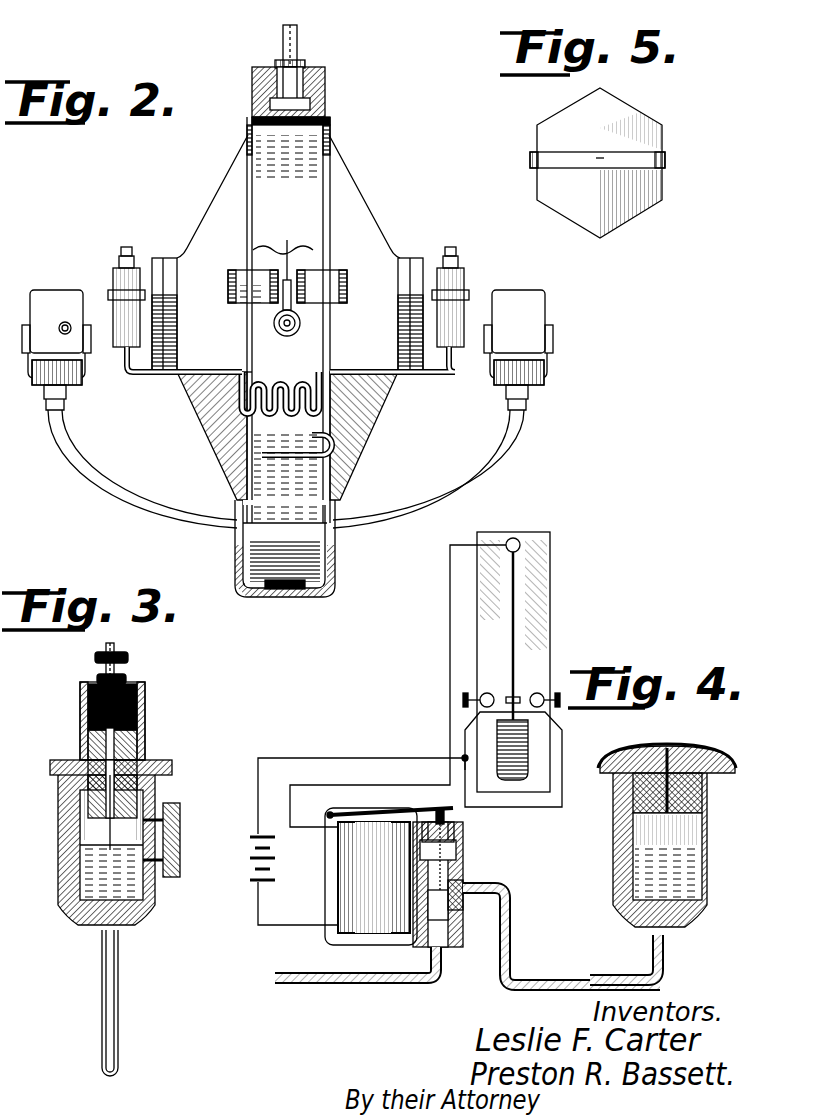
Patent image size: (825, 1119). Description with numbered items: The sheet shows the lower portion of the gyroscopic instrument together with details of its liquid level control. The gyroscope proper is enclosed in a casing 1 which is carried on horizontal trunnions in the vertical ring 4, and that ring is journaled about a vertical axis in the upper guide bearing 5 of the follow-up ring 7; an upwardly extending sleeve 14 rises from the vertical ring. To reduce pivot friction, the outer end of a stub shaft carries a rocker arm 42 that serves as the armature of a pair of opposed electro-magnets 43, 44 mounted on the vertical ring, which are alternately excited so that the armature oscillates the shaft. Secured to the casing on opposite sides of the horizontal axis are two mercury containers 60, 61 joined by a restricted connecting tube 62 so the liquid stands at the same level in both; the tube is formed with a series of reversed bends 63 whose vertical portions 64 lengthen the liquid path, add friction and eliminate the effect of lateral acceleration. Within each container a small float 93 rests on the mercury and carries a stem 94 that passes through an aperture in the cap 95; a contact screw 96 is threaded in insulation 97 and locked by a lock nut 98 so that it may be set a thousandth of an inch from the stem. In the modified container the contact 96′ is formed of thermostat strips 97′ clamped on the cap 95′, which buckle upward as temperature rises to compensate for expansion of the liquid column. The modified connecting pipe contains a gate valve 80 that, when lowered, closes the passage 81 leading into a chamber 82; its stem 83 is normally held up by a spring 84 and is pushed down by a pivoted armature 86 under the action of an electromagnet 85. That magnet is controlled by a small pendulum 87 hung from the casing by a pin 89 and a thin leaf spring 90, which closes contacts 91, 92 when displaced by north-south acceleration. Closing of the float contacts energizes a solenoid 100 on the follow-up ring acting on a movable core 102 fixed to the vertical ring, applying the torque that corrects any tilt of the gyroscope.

In FIG. 2, the casing 1 is at (287, 320).
In FIG. 4, the casing 1 is at (550, 562).
In FIG. 2, the vertical ring 4 is at (325, 95).
In FIG. 2, the upper guide bearing 5 is at (288, 592).
In FIG. 2, the follow-up ring 7 is at (336, 590).
In FIG. 2, the upwardly extending sleeve 14 is at (283, 46).
In FIG. 2, the rocker arm 42 is at (288, 275).
In FIG. 2, the electro-magnet 43 is at (242, 305).
In FIG. 2, the electro-magnet 44 is at (330, 275).
In FIG. 2, the container 60 is at (462, 302).
In FIG. 2, the container 61 is at (281, 311).
In FIG. 2, the connecting tube 62 is at (136, 381).
In FIG. 3, the connecting tube 62 is at (112, 1010).
In FIG. 2, the reversed bends 63 is at (280, 380).
In FIG. 2, the vertical portions 64 is at (242, 403).
In FIG. 4, the valve 80 is at (450, 872).
In FIG. 4, the passage 81 is at (438, 910).
In FIG. 4, the chamber 82 is at (460, 912).
In FIG. 4, the stem 83 is at (456, 850).
In FIG. 4, the spring 84 is at (446, 815).
In FIG. 4, the electromagnet 85 is at (345, 897).
In FIG. 4, the pivoted armature 86 is at (395, 810).
In FIG. 4, the pendulum 87 is at (530, 782).
In FIG. 4, the pin 89 is at (517, 540).
In FIG. 4, the leaf spring 90 is at (514, 607).
In FIG. 4, the contact 91 is at (486, 685).
In FIG. 4, the contact 92 is at (533, 684).
In FIG. 3, the float 93 is at (78, 838).
In FIG. 4, the float 93 is at (633, 840).
In FIG. 5, the stem 94 is at (600, 163).
In FIG. 3, the stem 94 is at (136, 740).
In FIG. 4, the stem 94 is at (655, 748).
In FIG. 3, the cap 95 is at (60, 762).
In FIG. 5, the cap 95′ is at (632, 210).
In FIG. 4, the cap 95′ is at (725, 775).
In FIG. 3, the contact screw 96 is at (128, 666).
In FIG. 5, the contact 96′ is at (618, 152).
In FIG. 4, the contact 96′ is at (672, 750).
In FIG. 3, the insulation 97 is at (80, 700).
In FIG. 4, the thermostat strips 97′ is at (606, 760).
In FIG. 3, the lock nut 98 is at (100, 672).
In FIG. 2, the solenoid 100 is at (286, 472).
In FIG. 2, the movable core 102 is at (352, 440).